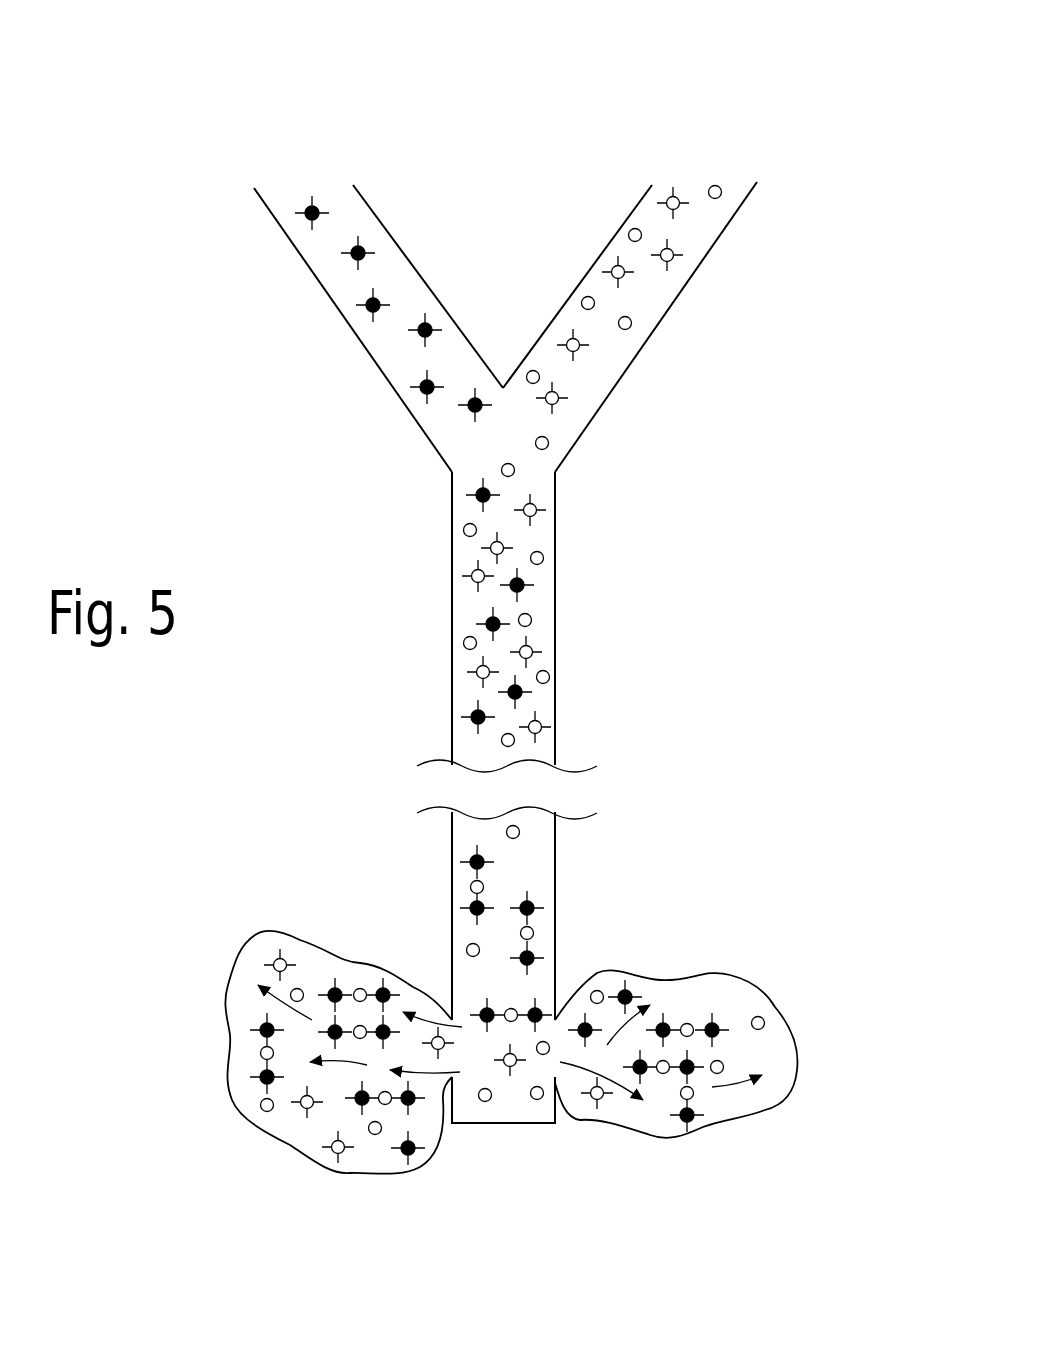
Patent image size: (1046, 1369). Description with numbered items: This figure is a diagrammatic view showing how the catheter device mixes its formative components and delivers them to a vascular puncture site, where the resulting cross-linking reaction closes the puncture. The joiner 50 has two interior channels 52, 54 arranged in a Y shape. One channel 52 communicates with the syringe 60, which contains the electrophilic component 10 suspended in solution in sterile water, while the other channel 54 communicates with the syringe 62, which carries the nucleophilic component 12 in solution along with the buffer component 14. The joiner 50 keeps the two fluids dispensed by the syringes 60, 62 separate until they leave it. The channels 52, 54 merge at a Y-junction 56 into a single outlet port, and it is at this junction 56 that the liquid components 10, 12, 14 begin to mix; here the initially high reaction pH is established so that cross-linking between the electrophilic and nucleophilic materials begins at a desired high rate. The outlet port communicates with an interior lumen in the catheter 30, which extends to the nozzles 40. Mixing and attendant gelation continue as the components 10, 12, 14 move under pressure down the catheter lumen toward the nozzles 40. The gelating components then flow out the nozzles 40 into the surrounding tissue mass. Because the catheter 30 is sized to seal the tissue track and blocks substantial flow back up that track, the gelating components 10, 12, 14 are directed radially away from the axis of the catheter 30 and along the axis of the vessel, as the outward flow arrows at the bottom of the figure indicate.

The electrophilic component 10 is at (312, 205).
The nucleophilic component 12 is at (668, 195).
The buffer component 14 is at (722, 200).
The catheter 30 is at (558, 713).
The nozzles 40 is at (450, 1017).
The joiner 50 is at (492, 228).
The channel 52 is at (330, 282).
The channel 54 is at (650, 303).
The Y-junction 56 is at (490, 441).
The syringe 60 is at (302, 188).
The syringe 62 is at (708, 175).